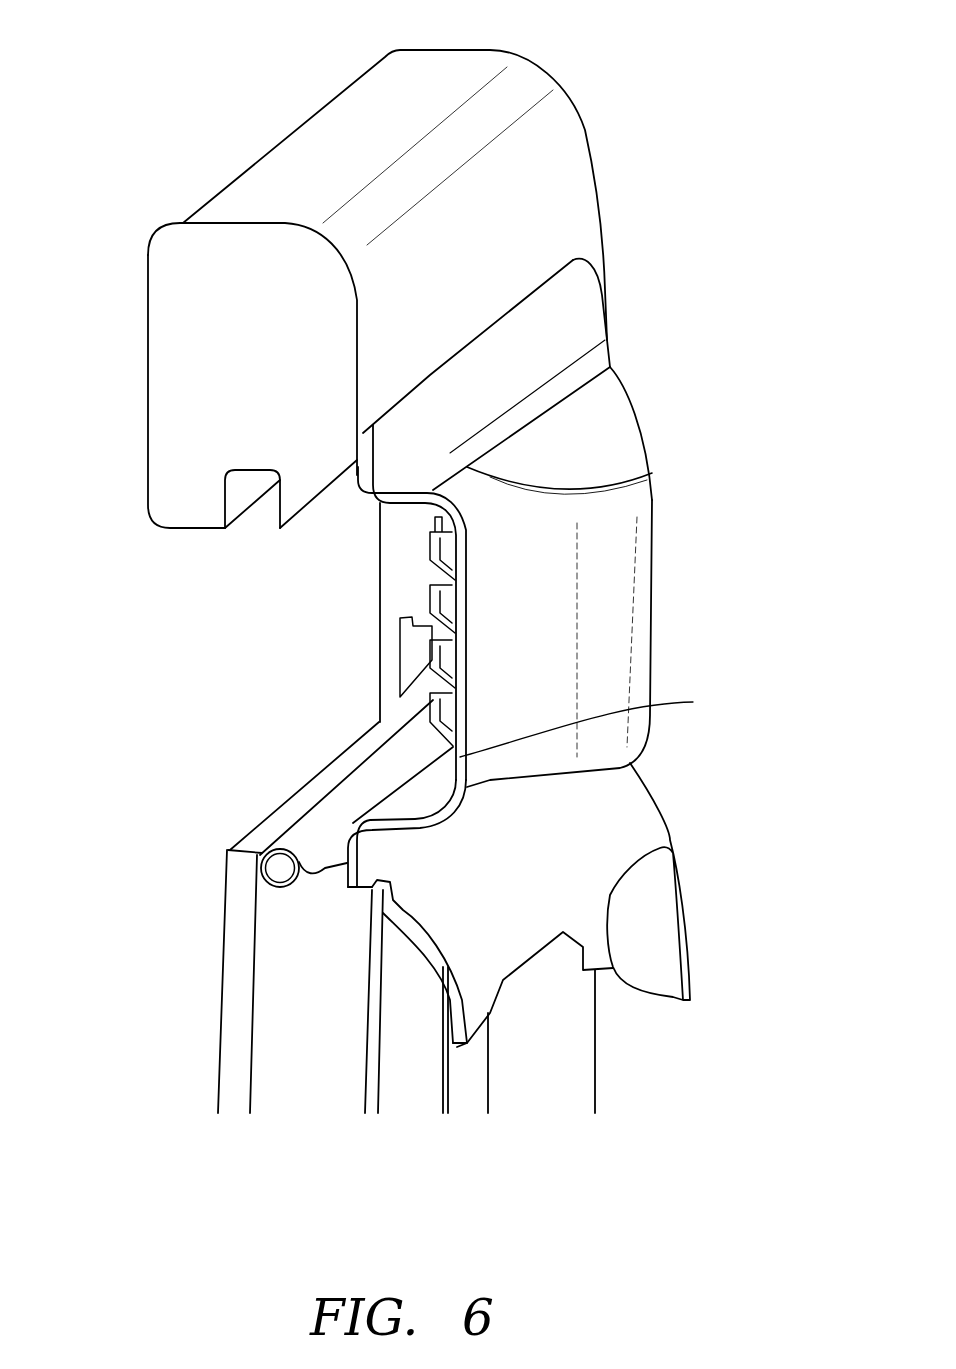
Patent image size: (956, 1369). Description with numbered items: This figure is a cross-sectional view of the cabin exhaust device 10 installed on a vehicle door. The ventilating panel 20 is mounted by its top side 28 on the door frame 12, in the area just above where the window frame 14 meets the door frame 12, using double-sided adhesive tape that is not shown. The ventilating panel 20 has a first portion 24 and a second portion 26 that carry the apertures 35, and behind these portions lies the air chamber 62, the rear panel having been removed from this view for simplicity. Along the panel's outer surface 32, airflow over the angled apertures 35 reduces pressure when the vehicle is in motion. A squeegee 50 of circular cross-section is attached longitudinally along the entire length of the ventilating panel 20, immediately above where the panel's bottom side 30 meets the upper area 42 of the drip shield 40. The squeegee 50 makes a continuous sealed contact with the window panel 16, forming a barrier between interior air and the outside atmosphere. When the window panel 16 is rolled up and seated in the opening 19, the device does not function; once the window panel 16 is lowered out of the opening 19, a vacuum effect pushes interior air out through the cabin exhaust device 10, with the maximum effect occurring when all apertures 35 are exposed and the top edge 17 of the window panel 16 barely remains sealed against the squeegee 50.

The cabin exhaust device 10 is at (683, 532).
The door frame 12 is at (450, 67).
The window frame 14 is at (303, 490).
The window panel 16 is at (217, 1067).
The top edge 17 is at (228, 853).
The opening 19 is at (235, 490).
The ventilating panel 20 is at (613, 597).
The first portion 24 is at (488, 625).
The second portion 26 is at (627, 458).
The top side 28 is at (570, 295).
The bottom side 30 is at (378, 848).
The outer surface 32 is at (605, 342).
The apertures 35 is at (596, 721).
The drip shield 40 is at (660, 840).
The upper area 42 is at (430, 872).
The squeegee 50 is at (262, 874).
The air chamber 62 is at (403, 540).